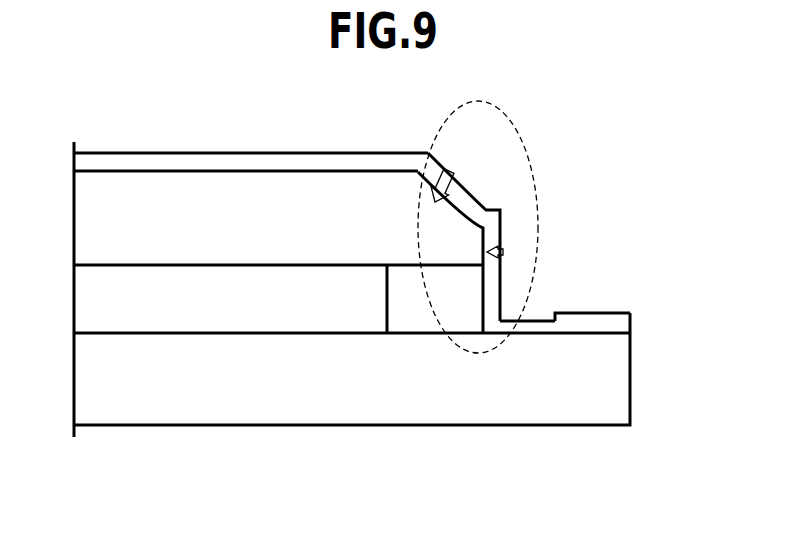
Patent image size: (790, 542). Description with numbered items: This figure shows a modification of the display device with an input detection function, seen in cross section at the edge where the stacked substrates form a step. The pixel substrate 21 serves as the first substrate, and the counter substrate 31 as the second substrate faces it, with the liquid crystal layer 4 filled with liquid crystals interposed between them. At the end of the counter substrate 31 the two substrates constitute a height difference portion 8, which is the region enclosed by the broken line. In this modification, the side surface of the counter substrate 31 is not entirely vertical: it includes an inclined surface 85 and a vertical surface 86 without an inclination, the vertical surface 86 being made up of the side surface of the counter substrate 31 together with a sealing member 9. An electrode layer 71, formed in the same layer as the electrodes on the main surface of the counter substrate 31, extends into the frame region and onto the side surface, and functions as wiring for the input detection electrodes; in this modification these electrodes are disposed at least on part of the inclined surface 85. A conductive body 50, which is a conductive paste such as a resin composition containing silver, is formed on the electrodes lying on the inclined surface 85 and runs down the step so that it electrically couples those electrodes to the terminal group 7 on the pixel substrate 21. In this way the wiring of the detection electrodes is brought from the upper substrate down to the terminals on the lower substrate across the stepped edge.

The liquid crystal layer 4 is at (251, 307).
The terminal group 7 is at (624, 327).
The height difference portion 8 is at (527, 138).
The sealing member 9 is at (410, 317).
The pixel substrate 21 is at (624, 384).
The counter substrate 31 is at (152, 202).
The conductive body 50 is at (467, 199).
The electrode layer 71 is at (331, 161).
The inclined surface 85 is at (441, 199).
The vertical surface 86 is at (503, 252).